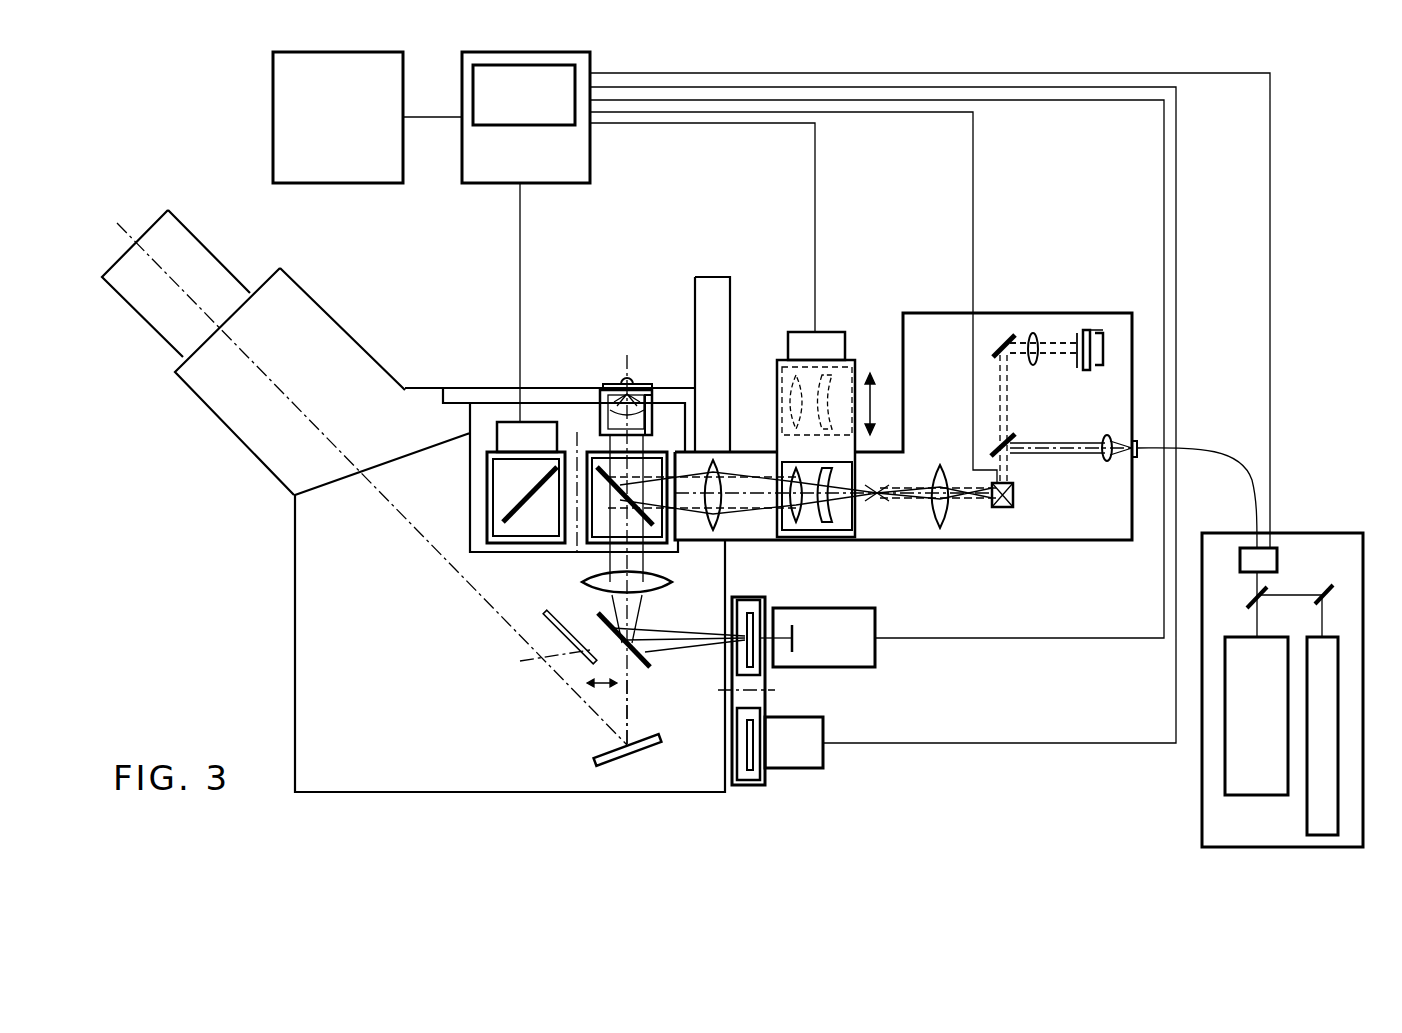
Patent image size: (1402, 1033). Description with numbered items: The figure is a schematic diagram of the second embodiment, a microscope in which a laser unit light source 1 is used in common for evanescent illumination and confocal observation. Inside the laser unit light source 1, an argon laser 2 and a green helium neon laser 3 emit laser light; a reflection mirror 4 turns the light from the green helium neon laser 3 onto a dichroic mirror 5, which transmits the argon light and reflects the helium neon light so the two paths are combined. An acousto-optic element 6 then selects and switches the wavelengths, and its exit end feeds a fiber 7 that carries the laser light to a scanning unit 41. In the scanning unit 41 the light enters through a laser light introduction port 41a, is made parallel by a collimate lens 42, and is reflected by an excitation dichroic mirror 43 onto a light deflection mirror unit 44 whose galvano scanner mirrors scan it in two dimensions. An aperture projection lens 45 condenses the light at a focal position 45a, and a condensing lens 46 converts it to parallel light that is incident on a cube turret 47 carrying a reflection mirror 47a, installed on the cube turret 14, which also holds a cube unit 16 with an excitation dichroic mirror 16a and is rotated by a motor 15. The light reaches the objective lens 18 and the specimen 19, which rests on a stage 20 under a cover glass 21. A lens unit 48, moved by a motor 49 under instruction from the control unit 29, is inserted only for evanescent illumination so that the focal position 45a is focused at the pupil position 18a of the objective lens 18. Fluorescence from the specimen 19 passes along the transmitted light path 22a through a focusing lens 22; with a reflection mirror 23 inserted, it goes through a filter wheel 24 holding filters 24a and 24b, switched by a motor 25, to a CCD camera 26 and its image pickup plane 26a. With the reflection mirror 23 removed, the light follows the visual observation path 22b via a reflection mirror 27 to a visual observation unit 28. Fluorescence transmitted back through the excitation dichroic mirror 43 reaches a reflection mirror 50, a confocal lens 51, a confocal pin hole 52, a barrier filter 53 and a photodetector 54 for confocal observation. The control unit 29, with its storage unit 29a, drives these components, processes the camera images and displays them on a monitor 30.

The laser unit light source 1 is at (1215, 818).
The argon laser 2 is at (1225, 778).
The green helium neon laser 3 is at (1330, 820).
The reflection mirror 4 is at (1333, 592).
The dichroic mirror 5 is at (1248, 600).
The acousto-optic element 6 is at (1277, 562).
The fiber 7 is at (1248, 470).
The cube turret 14 is at (565, 548).
The motor 15 is at (510, 422).
The cube unit 16 is at (498, 493).
The excitation dichroic mirror 16a is at (530, 487).
The objective lens 18 is at (650, 405).
The pupil position 18a is at (655, 420).
The specimen 19 is at (627, 384).
The stage 20 is at (557, 398).
The cover glass 21 is at (605, 388).
The focusing lens 22 is at (590, 584).
The transmitted light path 22a is at (638, 617).
The visual observation path 22b is at (630, 712).
The reflection mirror 23 is at (560, 624).
The filter wheel 24 is at (765, 785).
The filter 24a is at (765, 672).
The filter 24b is at (748, 783).
The motor 25 is at (823, 760).
The CCD camera 26 is at (875, 656).
The image pickup plane 26a is at (795, 625).
The reflection mirror 27 is at (655, 750).
The visual observation unit 28 is at (328, 322).
The control unit 29 is at (506, 52).
The storage unit 29a is at (565, 66).
The monitor 30 is at (354, 52).
The scanning unit 41 is at (1005, 333).
The laser light introduction port 41a is at (1140, 450).
The collimate lens 42 is at (1106, 437).
The excitation dichroic mirror 43 is at (1015, 440).
The light deflection mirror unit 44 is at (1001, 508).
The aperture projection lens 45 is at (942, 530).
The focal position 45a is at (877, 497).
The condensing lens 46 is at (720, 527).
The cube turret 47 is at (655, 548).
The reflection mirror 47a is at (588, 477).
The lens unit 48 is at (838, 465).
The motor 49 is at (828, 332).
The reflection mirror 50 is at (1008, 340).
The confocal lens 51 is at (1035, 333).
The confocal pin hole 52 is at (1085, 328).
The barrier filter 53 is at (1100, 333).
The photodetector 54 is at (1105, 340).